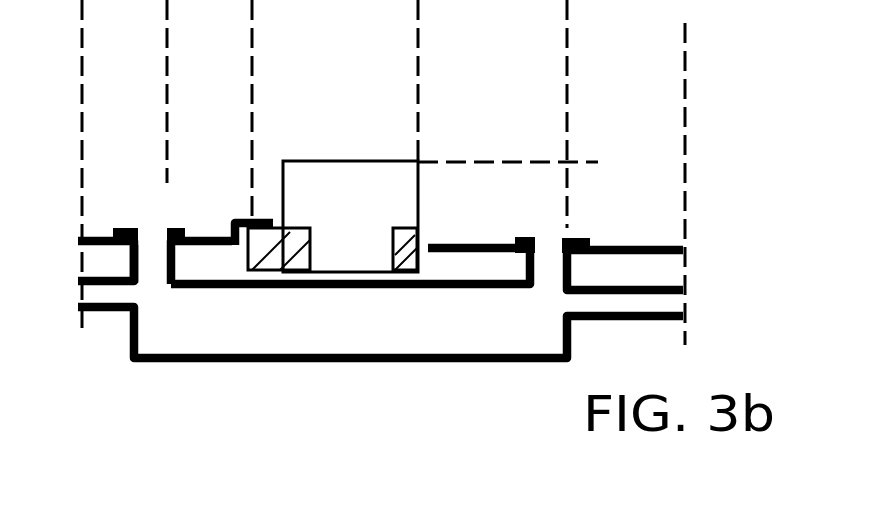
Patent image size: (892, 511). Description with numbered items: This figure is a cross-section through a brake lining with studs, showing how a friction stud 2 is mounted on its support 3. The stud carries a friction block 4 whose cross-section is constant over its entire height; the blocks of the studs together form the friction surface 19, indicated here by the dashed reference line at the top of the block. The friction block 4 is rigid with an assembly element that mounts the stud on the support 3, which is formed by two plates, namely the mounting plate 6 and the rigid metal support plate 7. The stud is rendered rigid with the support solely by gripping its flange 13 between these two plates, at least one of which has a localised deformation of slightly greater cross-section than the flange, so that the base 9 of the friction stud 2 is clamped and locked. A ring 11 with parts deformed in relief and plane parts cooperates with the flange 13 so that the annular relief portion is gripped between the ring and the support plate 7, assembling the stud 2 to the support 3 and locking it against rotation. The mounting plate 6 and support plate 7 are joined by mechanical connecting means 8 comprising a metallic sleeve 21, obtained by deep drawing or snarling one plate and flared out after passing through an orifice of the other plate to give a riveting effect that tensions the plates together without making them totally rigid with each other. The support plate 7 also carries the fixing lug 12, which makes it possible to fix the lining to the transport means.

The friction stud 2 is at (427, 212).
The support 3 is at (113, 320).
The friction block 4 is at (377, 170).
The mounting plate 6 is at (605, 247).
The rigid support plate 7 is at (473, 293).
The mechanical connecting means 8 is at (160, 247).
The base of the friction stud 9 is at (300, 268).
The ring 11 is at (252, 218).
The fixing lug 12 is at (443, 365).
The flange 13 is at (267, 258).
The friction surface 19 is at (467, 162).
The metallic sleeve 21 is at (140, 268).